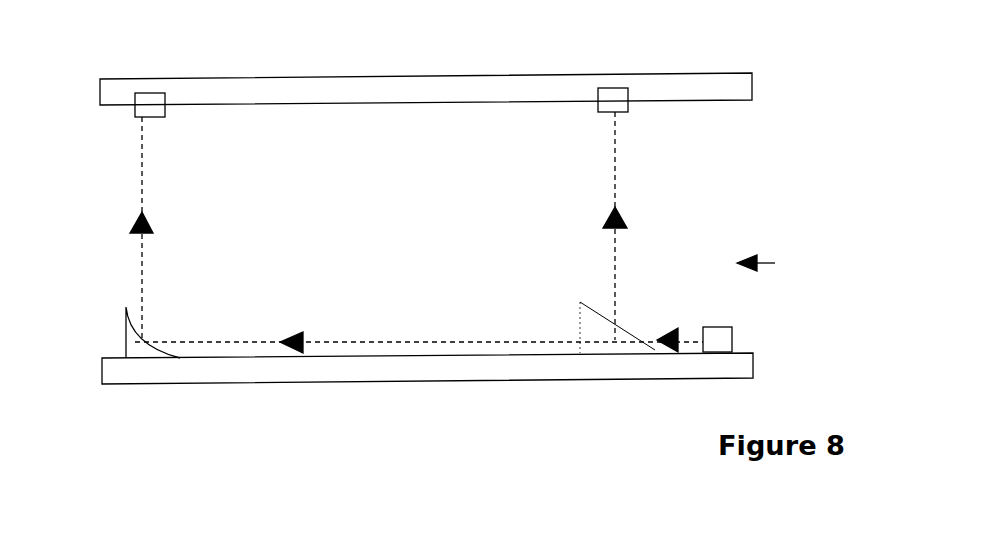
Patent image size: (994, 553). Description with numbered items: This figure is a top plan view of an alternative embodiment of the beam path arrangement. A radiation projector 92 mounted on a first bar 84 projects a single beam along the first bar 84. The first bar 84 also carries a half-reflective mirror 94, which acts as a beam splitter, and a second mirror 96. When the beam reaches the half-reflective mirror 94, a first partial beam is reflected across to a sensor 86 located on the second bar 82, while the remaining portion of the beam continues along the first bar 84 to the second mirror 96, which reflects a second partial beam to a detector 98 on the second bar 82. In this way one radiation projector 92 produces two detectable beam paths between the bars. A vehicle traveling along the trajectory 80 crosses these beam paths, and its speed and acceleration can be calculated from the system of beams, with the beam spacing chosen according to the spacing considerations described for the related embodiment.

The trajectory 80 is at (775, 263).
The second bar 82 is at (363, 88).
The first bar 84 is at (491, 370).
The sensor 86 is at (628, 112).
The radiation projector 92 is at (732, 337).
The half-reflective mirror 94 is at (580, 325).
The second mirror 96 is at (140, 343).
The detector 98 is at (162, 117).